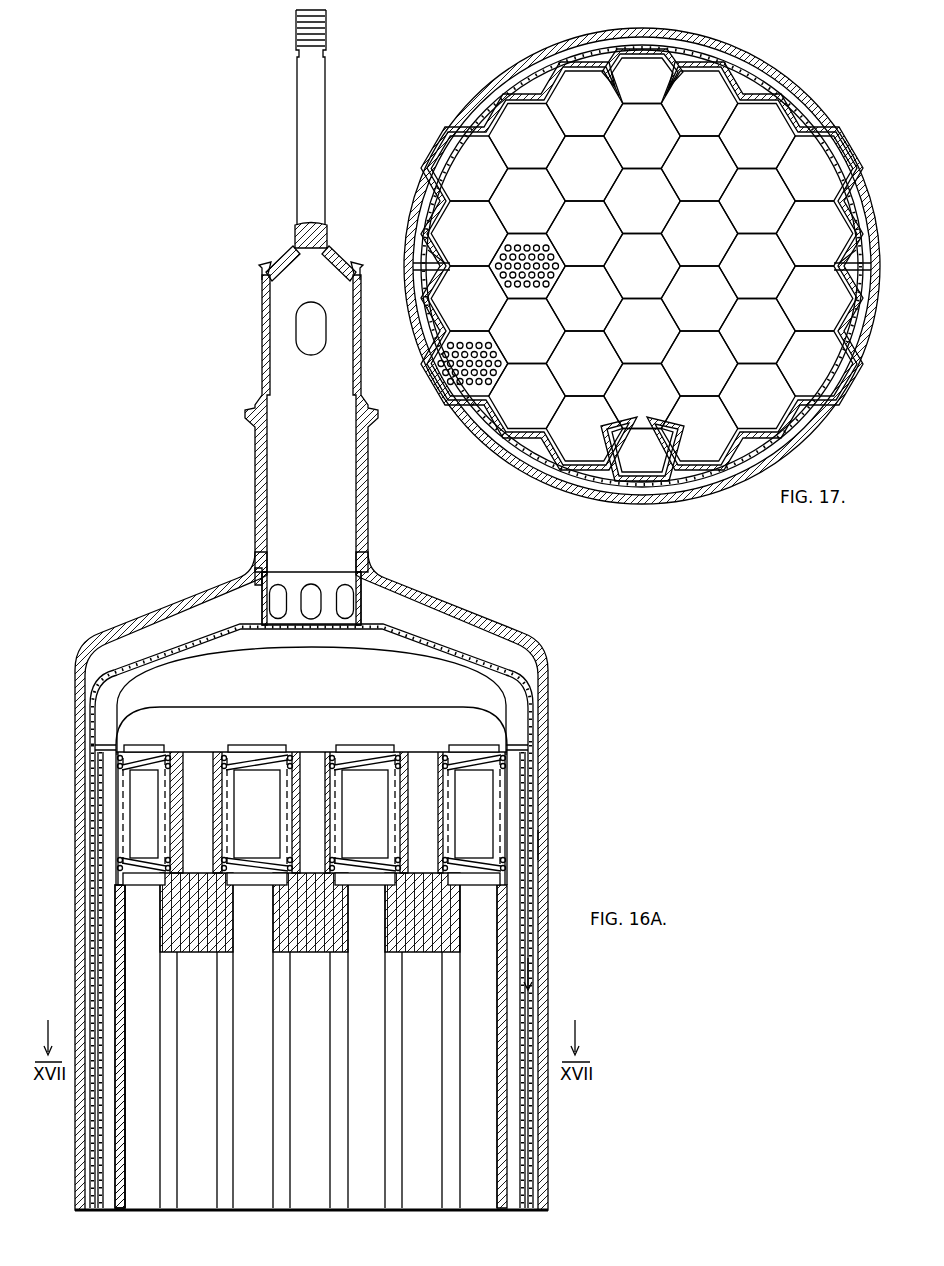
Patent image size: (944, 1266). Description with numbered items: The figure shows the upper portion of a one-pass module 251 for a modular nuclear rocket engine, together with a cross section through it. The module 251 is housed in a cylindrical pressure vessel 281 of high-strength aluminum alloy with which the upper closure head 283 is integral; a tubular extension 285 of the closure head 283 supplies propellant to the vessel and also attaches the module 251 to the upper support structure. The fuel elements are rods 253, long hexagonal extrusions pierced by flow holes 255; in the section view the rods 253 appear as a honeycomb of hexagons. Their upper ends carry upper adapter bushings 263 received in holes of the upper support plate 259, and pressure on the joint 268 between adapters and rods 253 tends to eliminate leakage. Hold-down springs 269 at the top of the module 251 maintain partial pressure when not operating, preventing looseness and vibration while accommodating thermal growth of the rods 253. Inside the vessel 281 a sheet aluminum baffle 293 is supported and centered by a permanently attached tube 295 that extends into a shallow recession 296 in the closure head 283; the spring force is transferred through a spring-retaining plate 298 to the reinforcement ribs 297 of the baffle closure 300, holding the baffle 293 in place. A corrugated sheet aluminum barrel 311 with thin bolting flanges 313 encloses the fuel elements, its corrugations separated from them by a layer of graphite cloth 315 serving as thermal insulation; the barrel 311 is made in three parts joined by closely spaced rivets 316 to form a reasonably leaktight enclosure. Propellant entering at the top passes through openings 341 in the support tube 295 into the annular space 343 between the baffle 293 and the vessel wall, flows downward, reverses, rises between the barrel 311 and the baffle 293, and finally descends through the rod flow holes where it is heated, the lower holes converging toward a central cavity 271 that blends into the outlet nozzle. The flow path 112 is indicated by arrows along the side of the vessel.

In FIG. 16A, the coolant flow path 112 is at (535, 975).
In FIG. 17, the module 251 is at (497, 478).
In FIG. 16A, the module 251 is at (597, 811).
In FIG. 17, the fuel rods 253 is at (762, 410).
In FIG. 16A, the fuel rods 253 is at (412, 993).
In FIG. 16A, the holes 255 is at (330, 912).
In FIG. 16A, the upper support plate 259 is at (557, 604).
In FIG. 16A, the upper adapter bushings 263 is at (298, 752).
In FIG. 16A, the joint 268 is at (338, 886).
In FIG. 16A, the hold-down springs 269 is at (236, 752).
In FIG. 17, the central cavity 271 is at (492, 98).
In FIG. 17, the pressure vessel 281 is at (797, 94).
In FIG. 16A, the upper closure head 283 is at (538, 634).
In FIG. 16A, the tubular extension 285 is at (252, 302).
In FIG. 16A, the baffle 293 is at (92, 771).
In FIG. 16A, the tube 295 is at (262, 603).
In FIG. 16A, the shallow recession 296 is at (268, 575).
In FIG. 16A, the reinforcement ribs 297 is at (167, 672).
In FIG. 16A, the spring-retaining plate 298 is at (447, 750).
In FIG. 16A, the baffle closure 300 is at (176, 655).
In FIG. 17, the corrugated sheet aluminum barrel 311 is at (445, 325).
In FIG. 16A, the corrugated sheet aluminum barrel 311 is at (117, 914).
In FIG. 16A, the bolting flanges 313 is at (95, 745).
In FIG. 16A, the graphite cloth 315 is at (125, 950).
In FIG. 17, the rivets 316 is at (432, 258).
In FIG. 16A, the openings 341 is at (354, 603).
In FIG. 16A, the annular space 343 is at (540, 845).